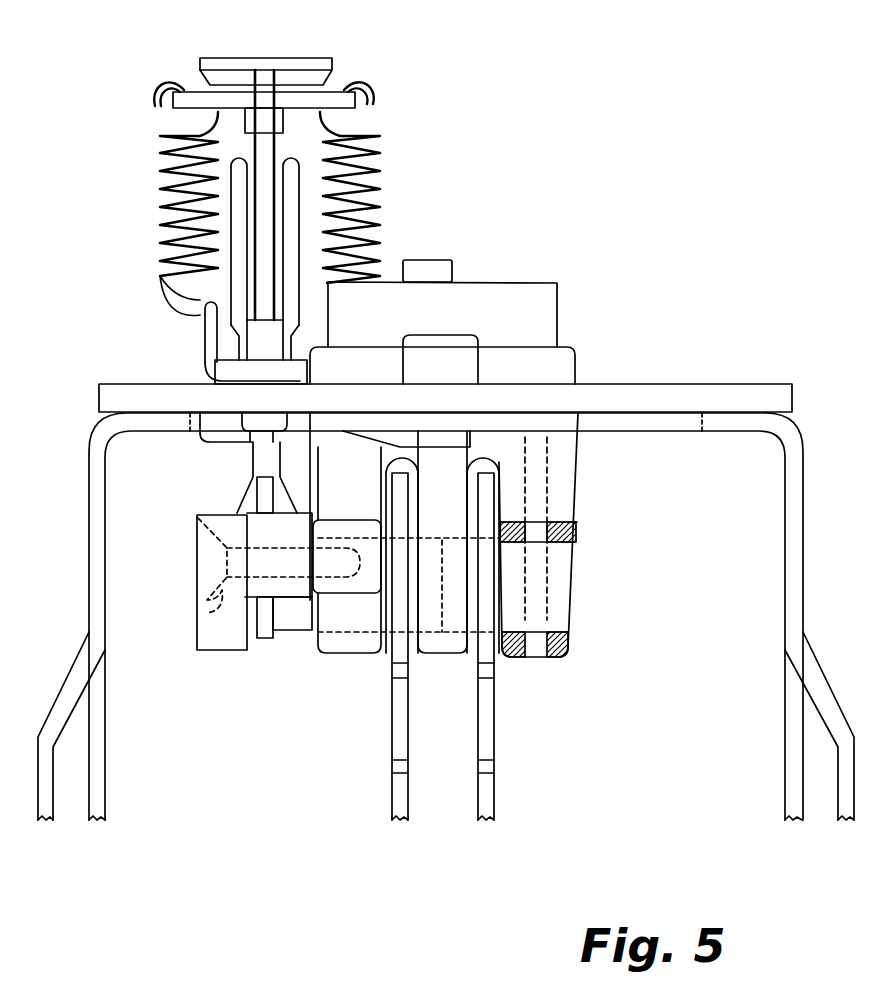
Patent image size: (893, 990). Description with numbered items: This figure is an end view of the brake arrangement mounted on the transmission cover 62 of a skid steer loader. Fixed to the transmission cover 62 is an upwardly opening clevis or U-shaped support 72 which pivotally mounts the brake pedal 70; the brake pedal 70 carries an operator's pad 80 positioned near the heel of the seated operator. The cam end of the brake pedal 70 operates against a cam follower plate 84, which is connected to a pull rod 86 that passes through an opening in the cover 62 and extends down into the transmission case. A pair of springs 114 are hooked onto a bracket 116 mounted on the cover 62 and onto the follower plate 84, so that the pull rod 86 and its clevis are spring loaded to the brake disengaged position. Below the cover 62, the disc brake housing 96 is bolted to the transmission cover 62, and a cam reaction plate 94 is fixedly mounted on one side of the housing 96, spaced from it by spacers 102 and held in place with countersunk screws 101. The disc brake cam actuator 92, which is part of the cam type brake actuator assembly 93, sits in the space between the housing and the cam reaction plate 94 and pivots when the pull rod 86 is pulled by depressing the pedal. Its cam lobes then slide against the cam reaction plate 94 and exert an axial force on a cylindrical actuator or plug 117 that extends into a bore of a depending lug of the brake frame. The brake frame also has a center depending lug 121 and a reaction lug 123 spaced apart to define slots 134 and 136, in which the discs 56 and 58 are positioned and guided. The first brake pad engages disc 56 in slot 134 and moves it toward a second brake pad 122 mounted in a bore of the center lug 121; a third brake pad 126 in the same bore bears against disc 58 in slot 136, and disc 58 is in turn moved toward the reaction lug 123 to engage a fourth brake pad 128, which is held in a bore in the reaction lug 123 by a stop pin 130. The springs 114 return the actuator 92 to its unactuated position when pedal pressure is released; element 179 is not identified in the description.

The disc 56 is at (397, 822).
The disc 58 is at (497, 802).
The transmission cover 62 is at (686, 396).
The brake pedal 70 is at (268, 148).
The support 72 is at (288, 227).
The operator's pad 80 is at (298, 63).
The cam follower plate 84 is at (340, 98).
The pull rod 86 is at (253, 455).
The disc brake cam actuator 92 is at (267, 492).
The cam type brake actuator assembly 93 is at (282, 645).
The cam reaction plate 94 is at (207, 650).
The disc brake housing 96 is at (555, 460).
The countersunk screws 101 is at (197, 622).
The spacers 102 is at (297, 618).
The springs 114 is at (172, 247).
The bracket 116 is at (207, 345).
The cylindrical actuator or plug 117 is at (285, 615).
The center depending lug 121 is at (435, 647).
The second brake pad 122 is at (397, 530).
The reaction lug 123 is at (560, 493).
The third brake pad 126 is at (470, 635).
The fourth brake pad 128 is at (560, 580).
The stop pin 130 is at (533, 645).
The slot 134 is at (400, 452).
The slot 136 is at (488, 452).
The first contact clip 179 is at (372, 650).